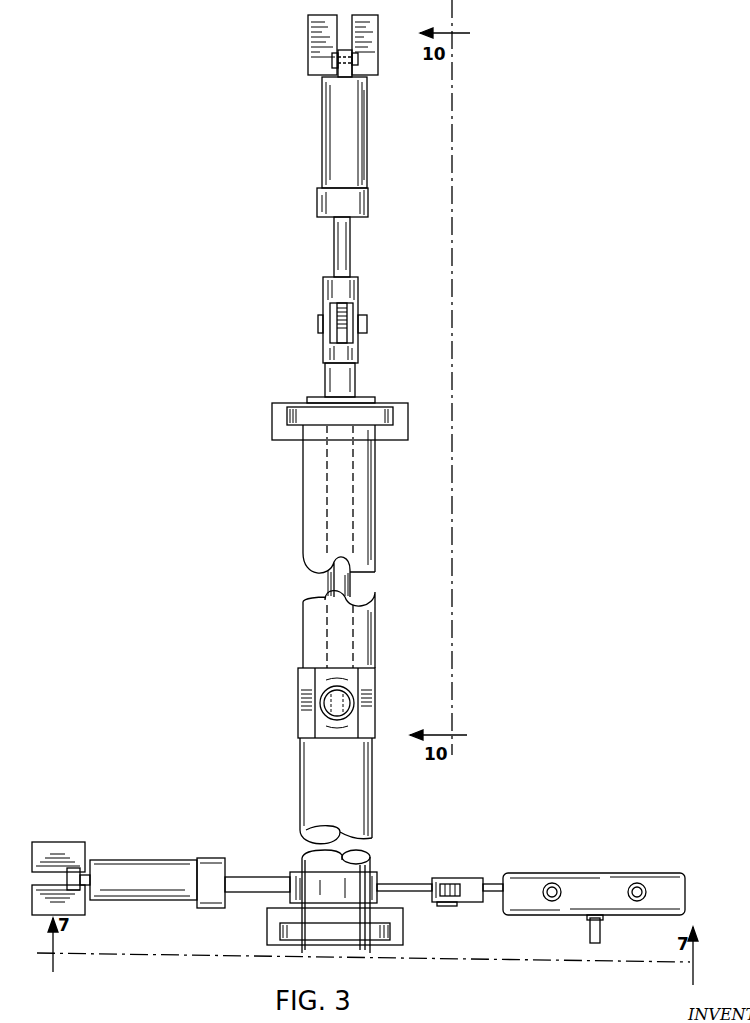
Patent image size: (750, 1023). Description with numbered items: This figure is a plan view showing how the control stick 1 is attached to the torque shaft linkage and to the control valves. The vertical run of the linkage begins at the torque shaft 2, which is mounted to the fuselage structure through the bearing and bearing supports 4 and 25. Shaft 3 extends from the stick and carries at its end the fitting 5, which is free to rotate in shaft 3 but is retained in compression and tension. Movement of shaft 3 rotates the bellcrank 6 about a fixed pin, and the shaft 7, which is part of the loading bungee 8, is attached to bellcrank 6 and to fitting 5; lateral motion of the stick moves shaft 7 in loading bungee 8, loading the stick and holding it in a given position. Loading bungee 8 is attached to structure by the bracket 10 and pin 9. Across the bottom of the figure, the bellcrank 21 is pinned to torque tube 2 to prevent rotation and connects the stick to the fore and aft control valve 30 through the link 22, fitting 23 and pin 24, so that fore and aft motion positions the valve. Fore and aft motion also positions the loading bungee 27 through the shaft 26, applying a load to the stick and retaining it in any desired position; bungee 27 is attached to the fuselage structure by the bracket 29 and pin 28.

The control stick 1 is at (298, 698).
The torque shaft 2 is at (372, 800).
The shaft 3 is at (320, 580).
The bearing and bearing support 4 is at (290, 412).
The fitting 5 is at (355, 350).
The bellcrank 6 is at (332, 322).
The shaft 7 is at (350, 262).
The loading bungee 8 is at (367, 170).
The pin 9 is at (332, 63).
The bracket 10 is at (308, 33).
The bellcrank 21 is at (378, 876).
The link 22 is at (405, 893).
The fitting 23 is at (478, 877).
The pin 24 is at (448, 906).
The bearing and bearing support 25 is at (380, 940).
The shaft 26 is at (256, 892).
The loading bungee 27 is at (145, 858).
The pin 28 is at (78, 890).
The bracket 29 is at (72, 812).
The fore and aft control valve 30 is at (583, 873).